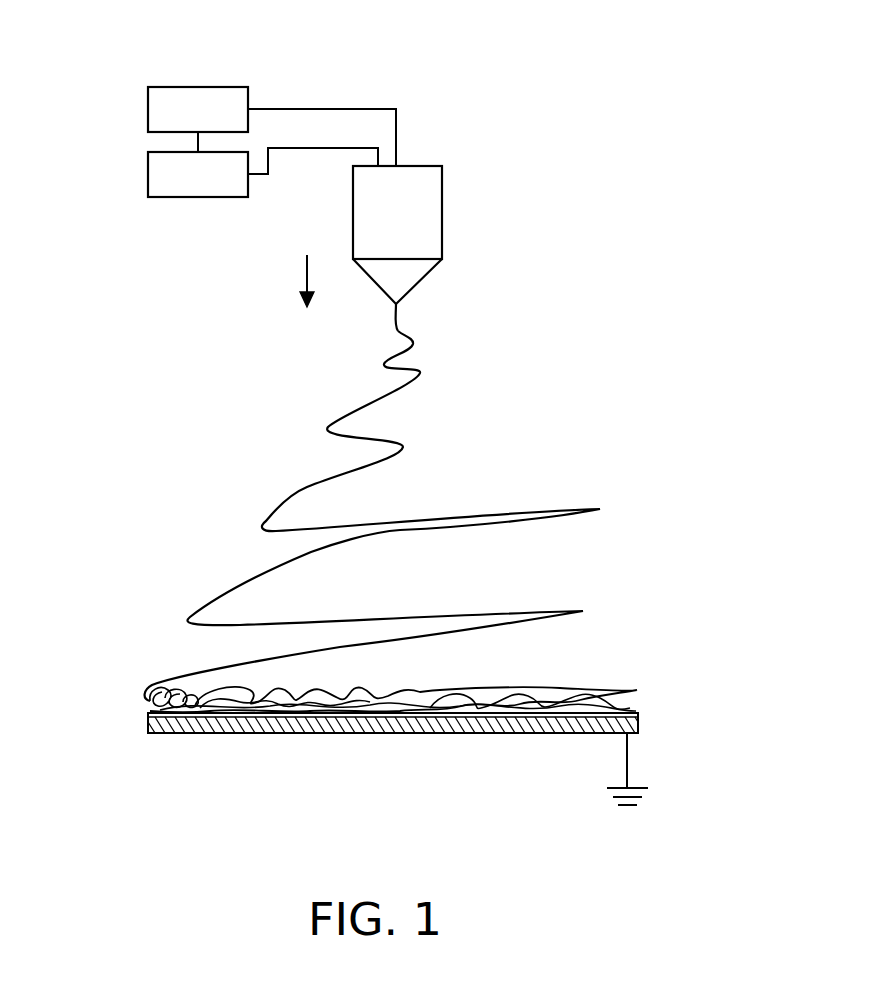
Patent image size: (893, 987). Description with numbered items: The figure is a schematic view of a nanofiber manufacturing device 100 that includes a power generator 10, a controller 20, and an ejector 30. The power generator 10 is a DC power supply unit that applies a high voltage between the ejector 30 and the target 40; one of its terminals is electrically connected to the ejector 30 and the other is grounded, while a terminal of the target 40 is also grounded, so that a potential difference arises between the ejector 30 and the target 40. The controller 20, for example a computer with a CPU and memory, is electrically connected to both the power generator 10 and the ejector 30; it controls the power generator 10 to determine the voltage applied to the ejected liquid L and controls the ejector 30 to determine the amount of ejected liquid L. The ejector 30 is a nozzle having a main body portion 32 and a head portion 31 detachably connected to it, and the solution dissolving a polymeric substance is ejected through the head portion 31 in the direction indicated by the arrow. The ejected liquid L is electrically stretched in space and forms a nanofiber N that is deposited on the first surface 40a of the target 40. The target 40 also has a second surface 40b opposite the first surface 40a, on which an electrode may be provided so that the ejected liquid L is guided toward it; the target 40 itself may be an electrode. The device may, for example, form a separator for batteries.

The power generator 10 is at (188, 87).
The controller 20 is at (148, 167).
The ejector 30 is at (515, 192).
The head portion 31 is at (413, 284).
The main body portion 32 is at (442, 211).
The target 40 is at (640, 721).
The first surface 40a is at (192, 733).
The second surface 40b is at (237, 735).
The nanofiber manufacturing device 100 is at (598, 263).
The ejected liquid L is at (395, 311).
The nanofiber N is at (325, 616).